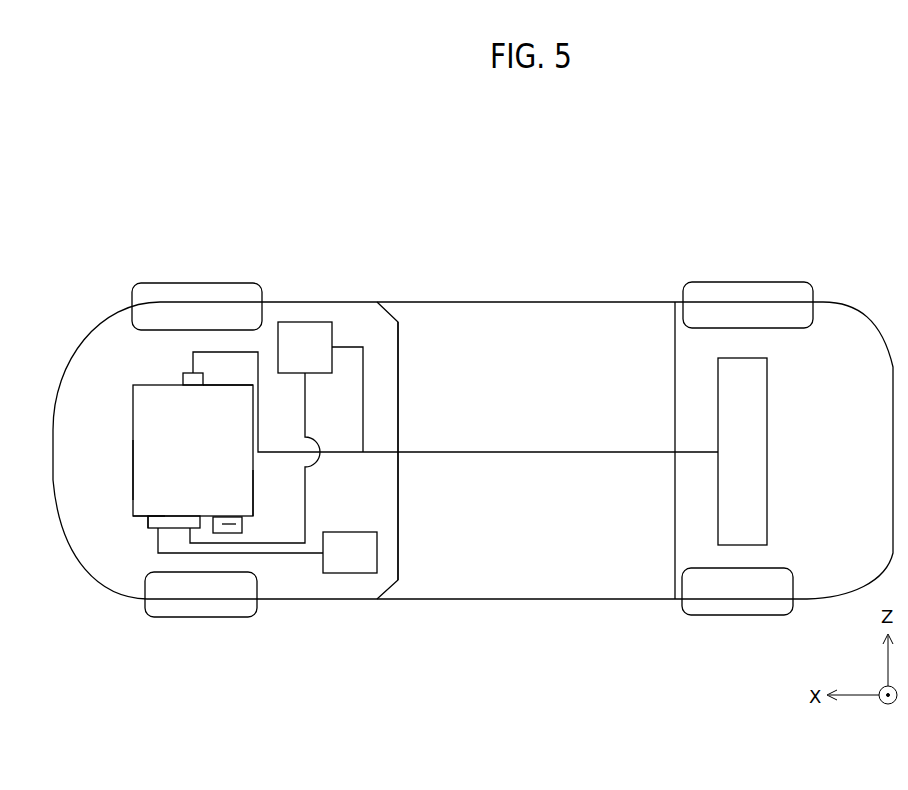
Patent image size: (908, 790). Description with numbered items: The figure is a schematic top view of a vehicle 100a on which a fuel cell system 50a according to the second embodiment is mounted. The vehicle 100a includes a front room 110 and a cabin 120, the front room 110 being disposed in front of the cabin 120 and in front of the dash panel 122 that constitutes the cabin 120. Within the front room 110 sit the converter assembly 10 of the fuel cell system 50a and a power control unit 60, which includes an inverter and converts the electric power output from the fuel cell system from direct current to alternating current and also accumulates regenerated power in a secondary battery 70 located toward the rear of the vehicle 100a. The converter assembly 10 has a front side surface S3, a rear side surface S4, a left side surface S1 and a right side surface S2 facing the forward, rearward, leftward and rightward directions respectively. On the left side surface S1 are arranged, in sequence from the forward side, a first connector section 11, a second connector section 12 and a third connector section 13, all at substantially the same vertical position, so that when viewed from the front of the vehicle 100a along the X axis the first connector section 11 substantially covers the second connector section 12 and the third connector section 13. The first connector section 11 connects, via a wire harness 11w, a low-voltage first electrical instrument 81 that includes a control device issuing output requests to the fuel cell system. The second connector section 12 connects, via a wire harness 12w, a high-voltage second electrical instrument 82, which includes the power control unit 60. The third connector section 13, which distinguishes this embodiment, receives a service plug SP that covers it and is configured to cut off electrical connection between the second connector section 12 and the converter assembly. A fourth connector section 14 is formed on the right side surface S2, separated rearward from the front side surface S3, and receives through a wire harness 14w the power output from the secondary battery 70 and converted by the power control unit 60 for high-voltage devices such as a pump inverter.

The converter assembly 10 is at (187, 505).
The first connector section 11 is at (147, 530).
The second connector section 12 is at (174, 534).
The third connector section 13 is at (246, 532).
The fourth connector section 14 is at (181, 380).
The wire harness 11w is at (262, 554).
The wire harness 12w is at (308, 481).
The wire harness 14w is at (221, 352).
The fuel cell system 50a is at (157, 450).
The power control unit 60 is at (303, 320).
The second electrical instrument 82 is at (320, 333).
The secondary battery 70 is at (768, 448).
The first electrical instrument 81 is at (343, 575).
The vehicle 100a is at (796, 202).
The front room 110 is at (357, 315).
The cabin 120 is at (535, 315).
The dash panel 122 is at (398, 390).
The left side surface S1 is at (148, 518).
The right side surface S2 is at (207, 385).
The front side surface S3 is at (133, 468).
The rear side surface S4 is at (253, 492).
The service plug SP is at (248, 525).